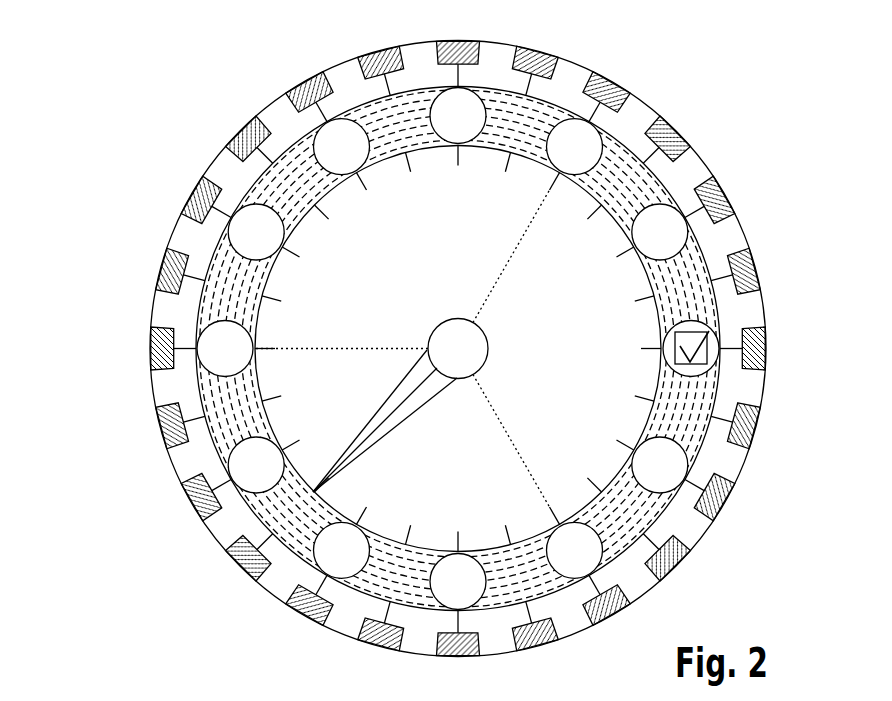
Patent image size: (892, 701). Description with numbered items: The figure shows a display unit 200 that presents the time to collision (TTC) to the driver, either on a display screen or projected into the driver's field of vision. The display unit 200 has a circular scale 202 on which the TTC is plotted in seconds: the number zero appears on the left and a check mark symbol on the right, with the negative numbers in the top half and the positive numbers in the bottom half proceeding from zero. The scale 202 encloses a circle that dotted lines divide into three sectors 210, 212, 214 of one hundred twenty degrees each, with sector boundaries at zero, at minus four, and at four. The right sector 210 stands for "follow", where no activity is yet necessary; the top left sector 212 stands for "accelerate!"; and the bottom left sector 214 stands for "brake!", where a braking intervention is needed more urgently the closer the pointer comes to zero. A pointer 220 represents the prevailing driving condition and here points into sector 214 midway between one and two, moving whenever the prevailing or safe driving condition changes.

The display unit 200 is at (150, 60).
The circular scale 202 is at (641, 107).
The sector 210 is at (542, 361).
The sector 212 is at (385, 272).
The sector 214 is at (434, 466).
The pointer 220 is at (353, 434).